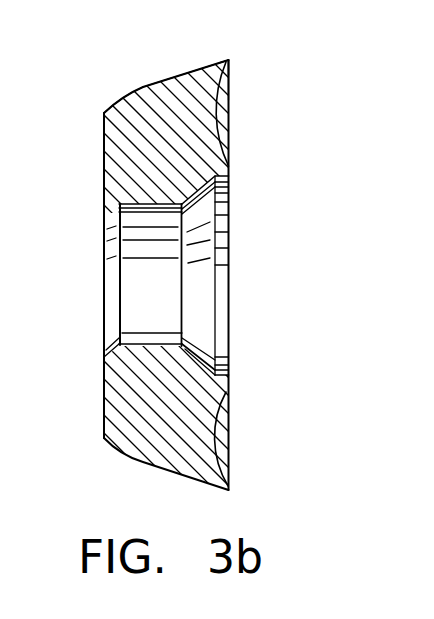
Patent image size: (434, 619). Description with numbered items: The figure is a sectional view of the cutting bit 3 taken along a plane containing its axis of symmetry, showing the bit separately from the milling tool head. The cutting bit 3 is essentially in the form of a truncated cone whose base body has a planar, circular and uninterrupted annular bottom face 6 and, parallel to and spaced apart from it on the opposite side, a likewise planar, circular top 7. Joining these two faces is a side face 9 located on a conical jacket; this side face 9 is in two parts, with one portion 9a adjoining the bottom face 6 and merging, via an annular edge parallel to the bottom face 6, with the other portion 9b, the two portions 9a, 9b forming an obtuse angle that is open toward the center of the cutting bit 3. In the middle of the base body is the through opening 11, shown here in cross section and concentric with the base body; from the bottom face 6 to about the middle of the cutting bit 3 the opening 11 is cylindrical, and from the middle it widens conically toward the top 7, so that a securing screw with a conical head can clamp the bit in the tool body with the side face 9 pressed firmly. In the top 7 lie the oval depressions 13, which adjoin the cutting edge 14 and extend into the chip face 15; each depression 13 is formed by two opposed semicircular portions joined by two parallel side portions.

The cutting bit 3 is at (157, 468).
The bottom face 6 is at (104, 125).
The top 7 is at (229, 174).
The side face 9 is at (154, 65).
The portion of the side face 9a is at (123, 99).
The portion of the side face 9b is at (203, 64).
The through opening 11 is at (163, 293).
The depression 13 is at (232, 128).
The cutting edge 14 is at (230, 60).
The chip face 15 is at (231, 62).